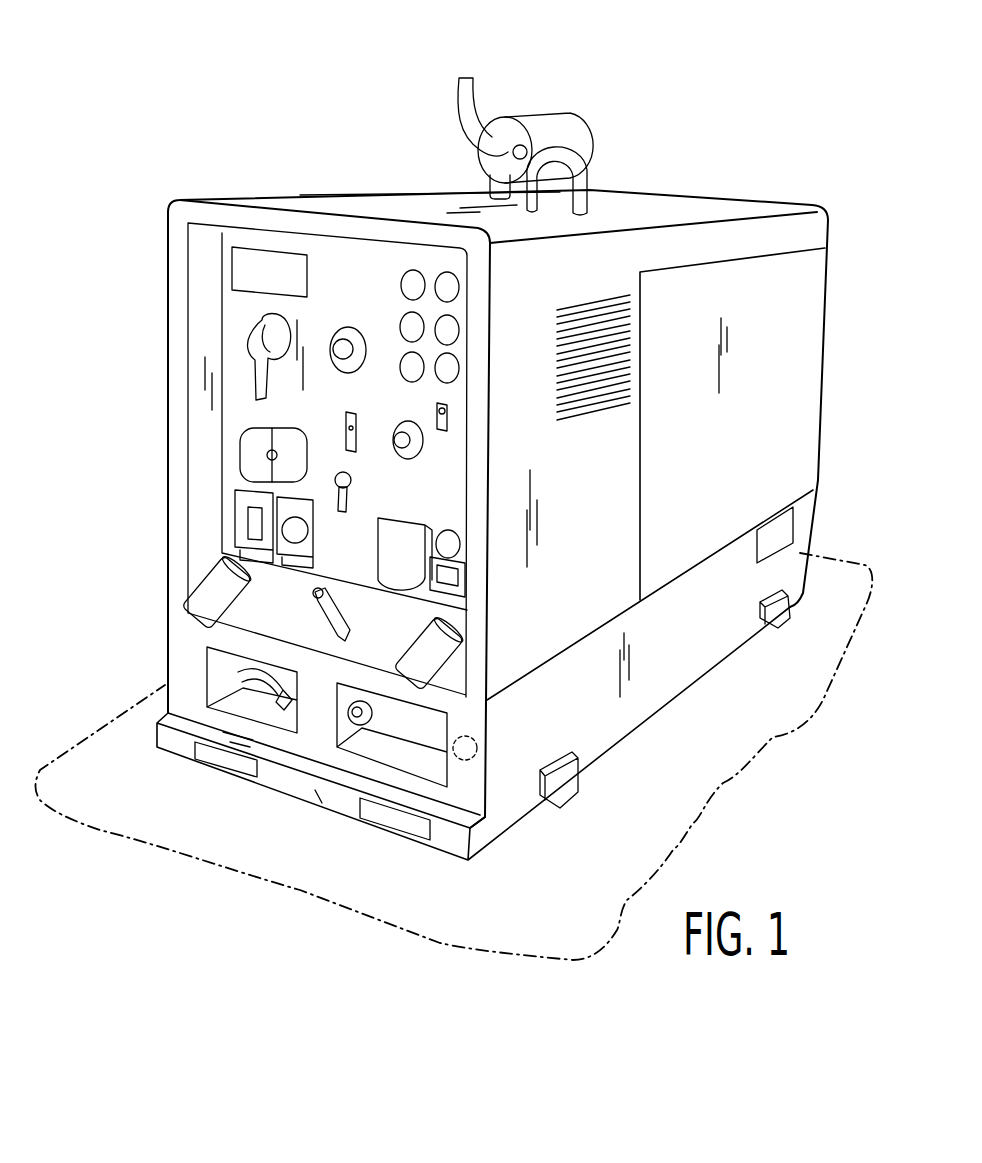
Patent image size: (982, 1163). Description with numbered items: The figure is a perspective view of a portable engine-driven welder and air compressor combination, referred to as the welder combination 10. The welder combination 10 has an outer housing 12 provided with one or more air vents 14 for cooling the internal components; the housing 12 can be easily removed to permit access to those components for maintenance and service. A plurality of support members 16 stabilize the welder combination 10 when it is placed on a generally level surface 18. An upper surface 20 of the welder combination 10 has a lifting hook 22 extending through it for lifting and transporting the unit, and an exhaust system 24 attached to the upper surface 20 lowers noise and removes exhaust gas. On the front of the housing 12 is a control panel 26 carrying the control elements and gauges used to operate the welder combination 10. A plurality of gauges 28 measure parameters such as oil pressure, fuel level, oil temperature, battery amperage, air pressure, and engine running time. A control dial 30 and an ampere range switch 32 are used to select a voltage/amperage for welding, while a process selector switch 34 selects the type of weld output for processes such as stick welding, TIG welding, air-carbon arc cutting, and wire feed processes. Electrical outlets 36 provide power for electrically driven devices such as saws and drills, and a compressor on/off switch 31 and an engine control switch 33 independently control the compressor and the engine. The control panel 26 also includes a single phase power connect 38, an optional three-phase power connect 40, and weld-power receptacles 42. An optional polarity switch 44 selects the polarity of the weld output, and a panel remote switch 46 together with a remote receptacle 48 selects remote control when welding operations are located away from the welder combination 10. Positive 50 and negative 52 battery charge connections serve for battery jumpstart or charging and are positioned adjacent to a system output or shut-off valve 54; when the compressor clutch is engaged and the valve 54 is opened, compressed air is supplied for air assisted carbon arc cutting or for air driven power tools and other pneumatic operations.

The welder combination 10 is at (189, 138).
The outer housing 12 is at (607, 566).
The air vents 14 is at (595, 410).
The support members 16 is at (580, 797).
The surface 18 is at (547, 906).
The upper surface 20 is at (403, 200).
The lifting hook 22 is at (577, 178).
The exhaust system 24 is at (550, 127).
The control panel 26 is at (340, 323).
The gauges 28 is at (447, 368).
The control dial 30 is at (350, 372).
The compressor on/off switch 31 is at (443, 433).
The ampere range switch 32 is at (270, 370).
The engine control switch 33 is at (413, 460).
The process selector switch 34 is at (253, 458).
The electrical outlets 36 is at (248, 520).
The single phase power connect 38 is at (412, 562).
The three-phase power connect 40 is at (463, 547).
The weld-power receptacles 42 is at (239, 599).
The polarity switch 44 is at (317, 597).
The panel remote switch 46 is at (353, 417).
The remote receptacle 48 is at (352, 498).
The positive battery charge connection 50 is at (350, 718).
The negative battery charge connection 52 is at (455, 745).
The shut-off valve 54 is at (243, 687).